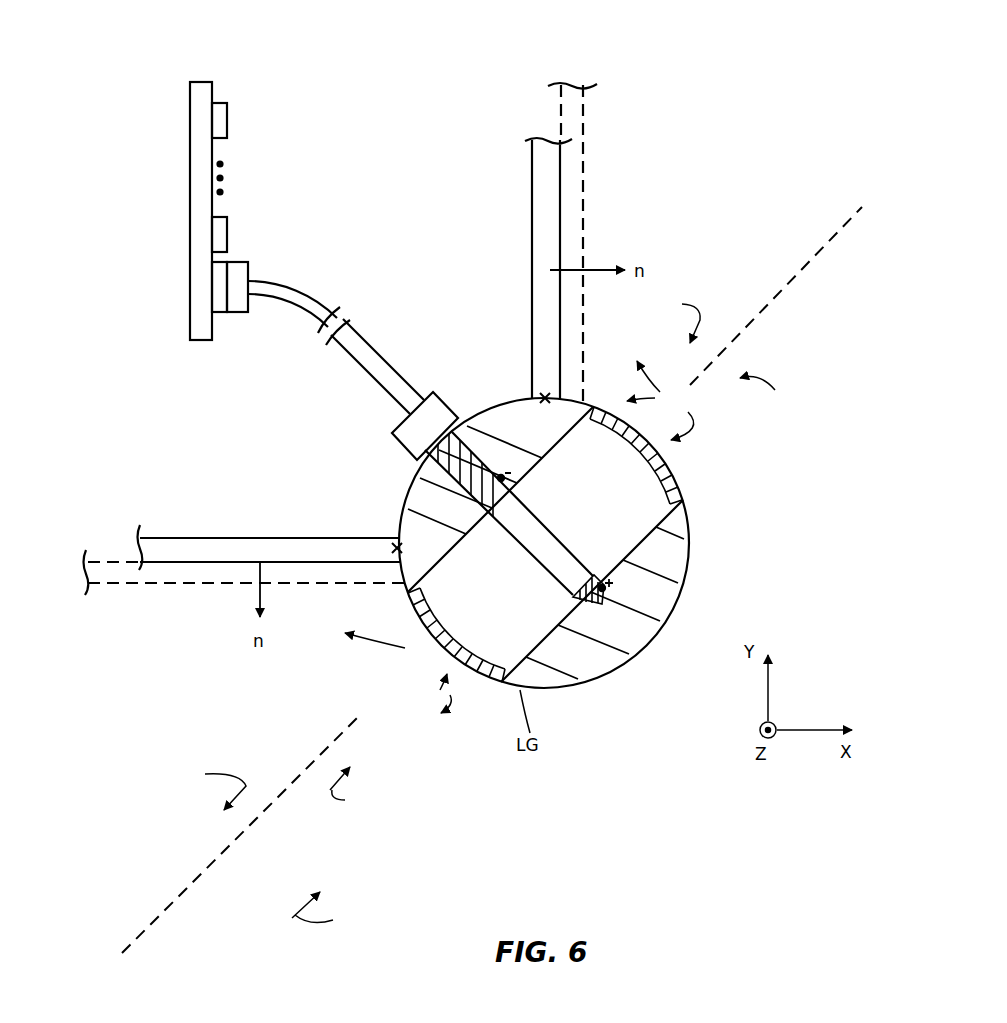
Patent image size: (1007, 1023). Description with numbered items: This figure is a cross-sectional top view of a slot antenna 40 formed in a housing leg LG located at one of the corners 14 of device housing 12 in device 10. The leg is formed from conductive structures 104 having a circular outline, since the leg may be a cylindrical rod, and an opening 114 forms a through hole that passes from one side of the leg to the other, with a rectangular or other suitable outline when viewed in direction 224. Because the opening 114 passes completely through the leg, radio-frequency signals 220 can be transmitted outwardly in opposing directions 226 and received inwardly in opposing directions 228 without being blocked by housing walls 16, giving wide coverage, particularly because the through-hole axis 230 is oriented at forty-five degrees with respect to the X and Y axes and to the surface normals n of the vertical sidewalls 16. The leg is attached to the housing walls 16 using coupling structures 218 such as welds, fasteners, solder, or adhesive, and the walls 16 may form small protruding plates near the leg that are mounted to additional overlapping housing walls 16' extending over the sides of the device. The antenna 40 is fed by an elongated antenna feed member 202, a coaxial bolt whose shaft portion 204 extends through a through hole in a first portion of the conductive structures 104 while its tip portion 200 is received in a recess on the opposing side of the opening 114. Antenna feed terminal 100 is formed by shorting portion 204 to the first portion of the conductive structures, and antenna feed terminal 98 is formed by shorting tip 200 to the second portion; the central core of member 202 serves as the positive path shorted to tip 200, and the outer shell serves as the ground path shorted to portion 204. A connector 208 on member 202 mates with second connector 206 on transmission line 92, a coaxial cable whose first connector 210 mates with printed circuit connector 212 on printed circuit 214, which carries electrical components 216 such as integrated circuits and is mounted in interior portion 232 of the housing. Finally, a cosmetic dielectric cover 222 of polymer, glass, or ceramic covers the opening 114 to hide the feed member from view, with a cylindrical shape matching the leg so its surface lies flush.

The device 10 is at (733, 51).
The device housing 12 is at (634, 216).
The corners 14 is at (348, 511).
The housing walls 16 is at (355, 354).
The housing walls 16' is at (366, 366).
The antenna 40 is at (768, 538).
The transmission line 92 is at (372, 355).
The antenna feed terminal 98 is at (603, 598).
The antenna feed terminal 100 is at (504, 480).
The conductive structures 104 is at (540, 420).
The opening 114 is at (650, 493).
The tip portion 200 is at (594, 572).
The elongated antenna feed member 202 is at (540, 548).
The portion 204 is at (450, 478).
The second connector 206 is at (395, 432).
The connector 208 is at (455, 420).
The first connector 210 is at (243, 270).
The printed circuit connector 212 is at (221, 312).
The printed circuit 214 is at (193, 195).
The electrical components 216 is at (228, 120).
The coupling structures 218 is at (543, 395).
The radio-frequency signals 220 is at (519, 537).
The cover 222 is at (686, 465).
The direction 224 is at (352, 792).
The opposing directions 226 is at (486, 594).
The opposing directions 228 is at (496, 610).
The through-hole axis 230 is at (800, 276).
The interior portion 232 is at (96, 444).